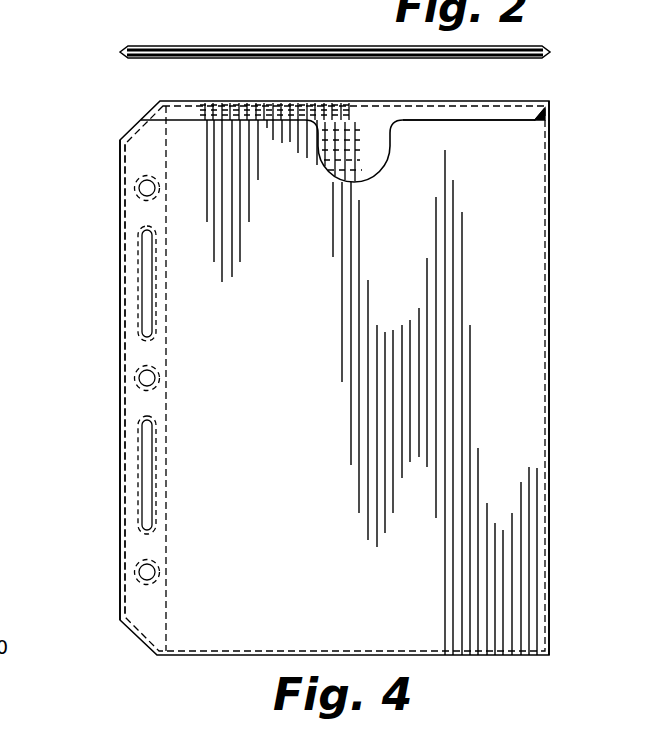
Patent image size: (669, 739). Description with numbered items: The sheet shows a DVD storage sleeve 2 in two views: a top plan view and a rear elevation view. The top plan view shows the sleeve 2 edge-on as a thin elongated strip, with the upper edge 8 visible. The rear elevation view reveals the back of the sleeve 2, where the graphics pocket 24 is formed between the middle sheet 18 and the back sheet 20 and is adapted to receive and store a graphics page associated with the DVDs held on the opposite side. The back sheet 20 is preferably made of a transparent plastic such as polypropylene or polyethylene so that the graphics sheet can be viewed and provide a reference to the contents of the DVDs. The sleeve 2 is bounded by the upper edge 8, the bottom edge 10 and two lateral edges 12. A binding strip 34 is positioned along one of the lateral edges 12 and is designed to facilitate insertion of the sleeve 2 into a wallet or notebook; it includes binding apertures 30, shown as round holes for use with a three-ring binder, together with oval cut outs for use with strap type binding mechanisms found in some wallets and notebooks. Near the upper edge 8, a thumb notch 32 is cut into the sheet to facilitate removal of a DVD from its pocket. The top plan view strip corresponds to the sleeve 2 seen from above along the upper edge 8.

In FIG. 4, the DVD storage sleeve 2 is at (25, 380).
In FIG. 2, the upper edge 8 is at (245, 48).
In FIG. 4, the upper edge 8 is at (497, 101).
In FIG. 4, the bottom edge 10 is at (165, 657).
In FIG. 4, the lateral edges 12 is at (119, 253).
In FIG. 4, the middle sheet 18 is at (377, 122).
In FIG. 4, the back sheet 20 is at (183, 148).
In FIG. 4, the graphics pocket 24 is at (543, 106).
In FIG. 4, the binding apertures 30 is at (142, 383).
In FIG. 4, the thumb notch 32 is at (323, 138).
In FIG. 4, the binding strip 34 is at (131, 537).